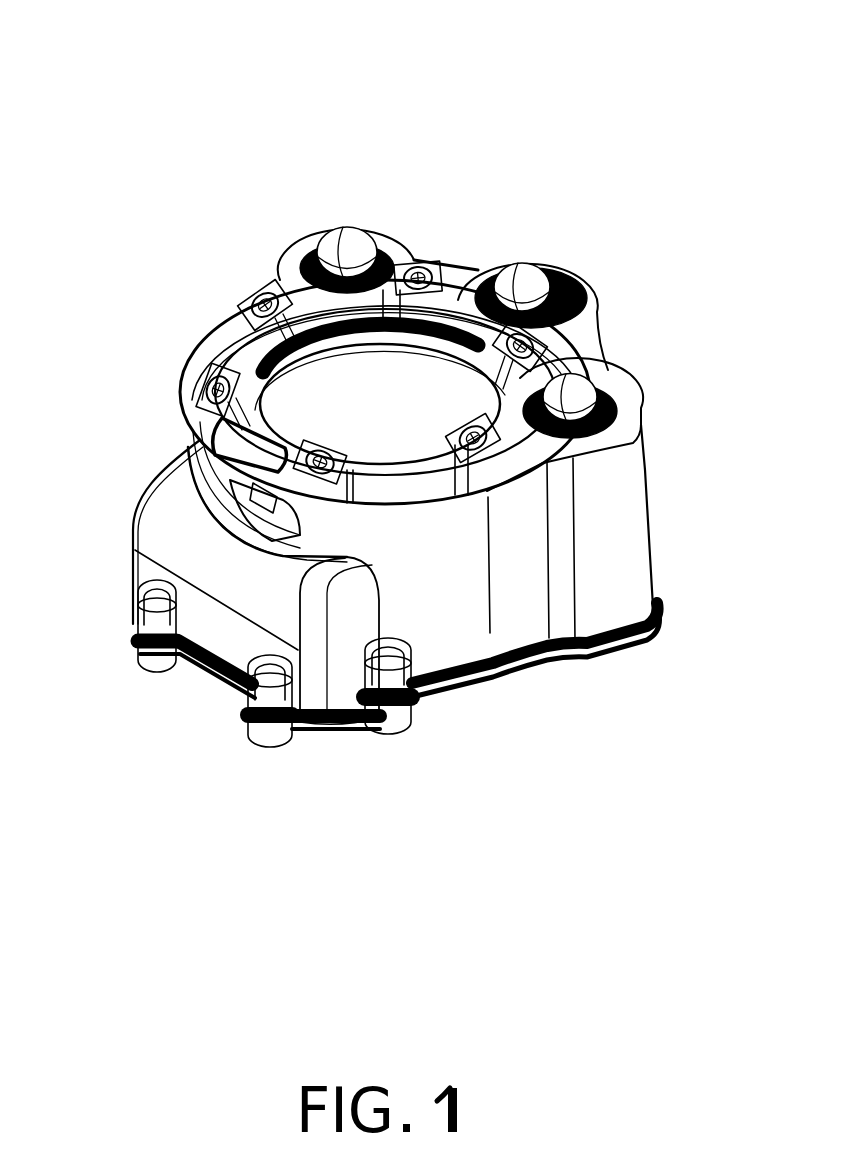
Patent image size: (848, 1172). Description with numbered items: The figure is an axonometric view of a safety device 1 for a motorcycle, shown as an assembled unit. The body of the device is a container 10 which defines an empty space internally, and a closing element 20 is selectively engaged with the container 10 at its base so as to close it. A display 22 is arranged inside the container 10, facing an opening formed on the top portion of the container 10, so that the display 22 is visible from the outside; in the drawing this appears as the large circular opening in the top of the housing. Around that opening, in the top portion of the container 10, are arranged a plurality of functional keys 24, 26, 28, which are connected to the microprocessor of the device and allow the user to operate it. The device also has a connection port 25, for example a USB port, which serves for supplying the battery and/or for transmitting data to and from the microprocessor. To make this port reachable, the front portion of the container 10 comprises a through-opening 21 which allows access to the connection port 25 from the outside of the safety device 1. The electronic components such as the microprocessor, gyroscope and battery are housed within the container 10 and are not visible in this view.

The safety device 1 is at (116, 102).
The container 10 is at (652, 494).
The closing element 20 is at (456, 699).
The through-opening 21 is at (215, 490).
The display 22 is at (307, 375).
The functional key 24 is at (333, 243).
The connection port 25 is at (270, 535).
The functional key 26 is at (530, 282).
The functional key 28 is at (586, 372).